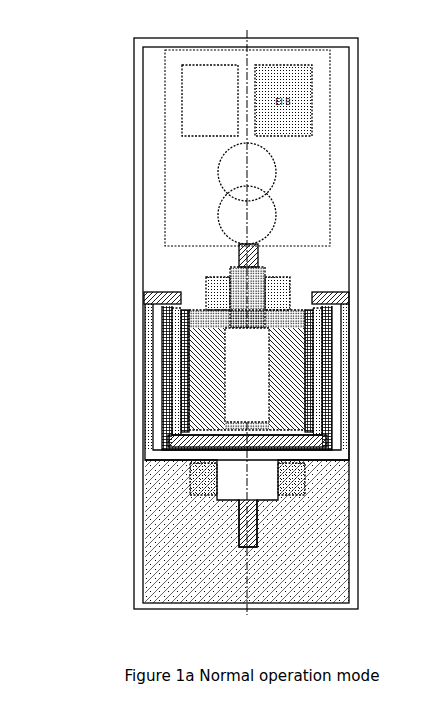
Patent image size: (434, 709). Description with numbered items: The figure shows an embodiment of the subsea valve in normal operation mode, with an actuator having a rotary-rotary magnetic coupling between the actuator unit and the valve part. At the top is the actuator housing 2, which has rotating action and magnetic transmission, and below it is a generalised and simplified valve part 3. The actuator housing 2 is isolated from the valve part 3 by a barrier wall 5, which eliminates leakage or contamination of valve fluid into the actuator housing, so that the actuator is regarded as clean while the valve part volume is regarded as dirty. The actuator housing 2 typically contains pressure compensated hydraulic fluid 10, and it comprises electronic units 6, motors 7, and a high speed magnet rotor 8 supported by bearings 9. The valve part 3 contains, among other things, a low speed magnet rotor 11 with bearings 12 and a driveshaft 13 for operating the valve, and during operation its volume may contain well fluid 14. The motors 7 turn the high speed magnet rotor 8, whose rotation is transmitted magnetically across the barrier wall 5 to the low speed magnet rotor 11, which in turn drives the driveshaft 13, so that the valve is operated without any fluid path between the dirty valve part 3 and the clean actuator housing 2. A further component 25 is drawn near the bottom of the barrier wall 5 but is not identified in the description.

The actuator housing 2 is at (358, 244).
The valve part 3 is at (232, 503).
The barrier wall 5 is at (160, 407).
The electronic units 6 is at (182, 98).
The motors 7 is at (227, 167).
The high speed magnet rotor 8 is at (192, 348).
The bearings 9 is at (206, 287).
The pressure compensated hydraulic fluid 10 is at (165, 255).
The low speed magnet rotor 11 is at (160, 388).
The bearings 12 is at (192, 479).
The driveshaft 13 is at (238, 533).
The well fluid 14 is at (175, 520).
The bottom plate 25 is at (165, 420).